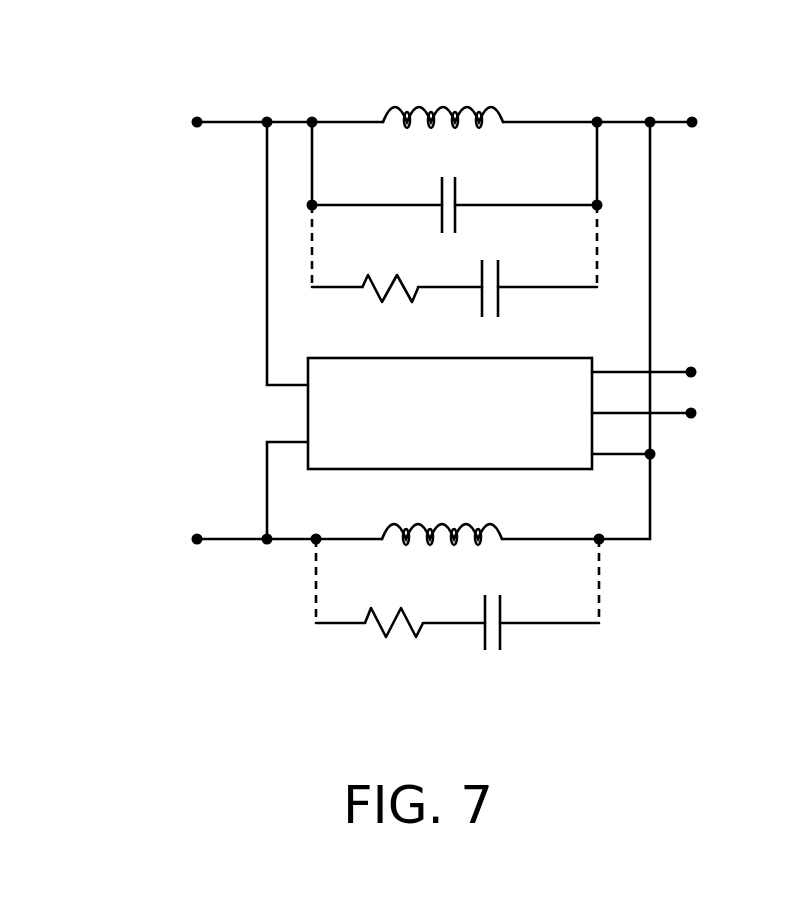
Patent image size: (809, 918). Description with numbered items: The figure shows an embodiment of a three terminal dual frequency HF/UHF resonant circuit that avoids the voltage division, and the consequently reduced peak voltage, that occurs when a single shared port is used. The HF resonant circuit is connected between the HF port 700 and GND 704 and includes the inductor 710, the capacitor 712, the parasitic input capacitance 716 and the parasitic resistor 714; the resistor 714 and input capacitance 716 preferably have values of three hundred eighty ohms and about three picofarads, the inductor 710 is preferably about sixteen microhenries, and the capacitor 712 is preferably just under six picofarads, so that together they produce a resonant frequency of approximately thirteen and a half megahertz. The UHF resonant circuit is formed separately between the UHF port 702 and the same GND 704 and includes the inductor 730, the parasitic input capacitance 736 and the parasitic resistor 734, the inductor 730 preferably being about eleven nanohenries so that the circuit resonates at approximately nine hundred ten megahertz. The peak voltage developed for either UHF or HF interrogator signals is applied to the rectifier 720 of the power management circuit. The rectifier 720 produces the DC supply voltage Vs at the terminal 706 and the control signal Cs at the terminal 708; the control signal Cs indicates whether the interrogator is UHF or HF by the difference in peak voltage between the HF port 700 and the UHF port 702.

The HF port 700 is at (196, 128).
The UHF port 702 is at (196, 545).
The GND 704 is at (650, 116).
The terminal 706 is at (692, 366).
The terminal 708 is at (693, 420).
The inductor 710 is at (431, 108).
The capacitor 712 is at (438, 197).
The resistor 714 is at (396, 278).
The input capacitance 716 is at (498, 278).
The rectifier 720 is at (521, 358).
The inductor 730 is at (497, 530).
The resistor 734 is at (398, 610).
The input capacitance 736 is at (503, 612).